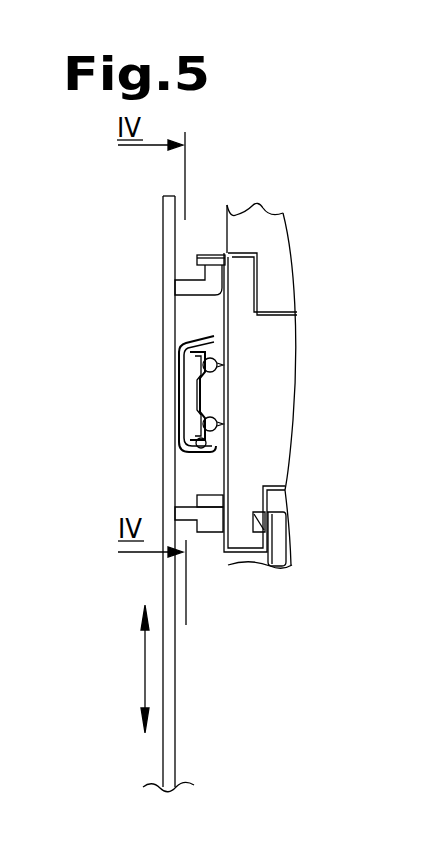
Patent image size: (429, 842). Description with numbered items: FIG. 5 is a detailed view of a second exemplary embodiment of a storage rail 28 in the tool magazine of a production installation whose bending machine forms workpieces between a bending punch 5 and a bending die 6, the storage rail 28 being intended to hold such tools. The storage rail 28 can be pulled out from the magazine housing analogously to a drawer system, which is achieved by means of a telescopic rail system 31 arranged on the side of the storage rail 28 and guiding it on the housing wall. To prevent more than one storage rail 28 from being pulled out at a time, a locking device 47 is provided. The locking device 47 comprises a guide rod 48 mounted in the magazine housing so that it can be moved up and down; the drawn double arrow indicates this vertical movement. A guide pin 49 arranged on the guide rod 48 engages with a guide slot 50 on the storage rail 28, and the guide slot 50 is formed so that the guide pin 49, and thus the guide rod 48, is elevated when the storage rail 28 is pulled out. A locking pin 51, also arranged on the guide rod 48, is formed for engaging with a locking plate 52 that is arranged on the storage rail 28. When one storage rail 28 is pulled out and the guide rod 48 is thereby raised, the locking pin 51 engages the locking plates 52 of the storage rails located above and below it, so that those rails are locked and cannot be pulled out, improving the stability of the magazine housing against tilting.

The bending punch 5 is at (275, 503).
The bending die 6 is at (312, 385).
The storage rail 28 is at (262, 348).
The telescopic rail system 31 is at (172, 331).
The locking device 47 is at (227, 298).
The guide rod 48 is at (170, 240).
The guide pin 49 is at (182, 515).
The guide slot 50 is at (200, 504).
The locking pin 51 is at (182, 286).
The locking plate 52 is at (212, 262).